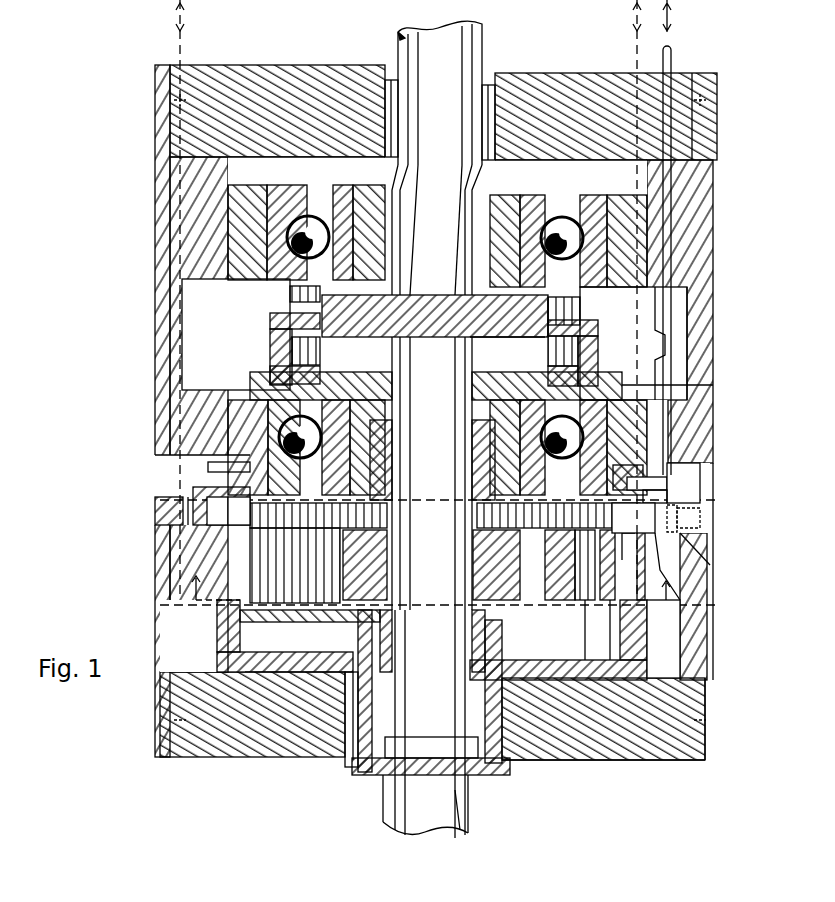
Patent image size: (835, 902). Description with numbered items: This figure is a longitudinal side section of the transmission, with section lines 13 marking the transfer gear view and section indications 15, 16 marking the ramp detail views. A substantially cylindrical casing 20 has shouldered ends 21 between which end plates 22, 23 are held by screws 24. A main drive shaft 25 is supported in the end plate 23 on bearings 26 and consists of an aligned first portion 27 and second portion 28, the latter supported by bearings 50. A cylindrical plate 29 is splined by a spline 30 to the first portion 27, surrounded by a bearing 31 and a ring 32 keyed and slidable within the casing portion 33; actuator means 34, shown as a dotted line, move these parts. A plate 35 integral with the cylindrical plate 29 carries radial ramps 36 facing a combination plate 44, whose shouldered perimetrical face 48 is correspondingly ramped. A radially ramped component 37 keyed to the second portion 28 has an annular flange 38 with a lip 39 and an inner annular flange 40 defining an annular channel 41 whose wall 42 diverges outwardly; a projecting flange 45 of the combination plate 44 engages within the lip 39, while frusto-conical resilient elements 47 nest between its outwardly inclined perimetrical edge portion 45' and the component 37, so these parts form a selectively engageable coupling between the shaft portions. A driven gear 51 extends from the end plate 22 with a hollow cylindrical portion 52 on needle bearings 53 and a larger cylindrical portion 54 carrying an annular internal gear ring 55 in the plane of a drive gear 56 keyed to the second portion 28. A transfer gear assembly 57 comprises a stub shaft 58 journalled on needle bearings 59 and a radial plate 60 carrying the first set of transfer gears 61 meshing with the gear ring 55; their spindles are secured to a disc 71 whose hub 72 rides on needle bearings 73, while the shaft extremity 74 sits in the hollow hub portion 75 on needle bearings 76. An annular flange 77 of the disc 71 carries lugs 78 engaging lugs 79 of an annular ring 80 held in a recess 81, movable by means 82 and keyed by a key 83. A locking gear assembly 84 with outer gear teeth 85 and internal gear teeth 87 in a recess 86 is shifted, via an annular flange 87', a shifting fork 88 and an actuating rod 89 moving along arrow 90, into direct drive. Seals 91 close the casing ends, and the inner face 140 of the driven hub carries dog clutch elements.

The section line 13 is at (426, 576).
The lower ball bearing 15 is at (283, 408).
The upper ball bearing 16 is at (297, 266).
The casing 20 is at (710, 598).
The shouldered ends 21 is at (705, 690).
The end plate 22 is at (660, 762).
The end plate 23 is at (570, 80).
The screws 24 is at (706, 740).
The main drive shaft 25 is at (440, 93).
The bearings 26 is at (378, 90).
The first portion 27 is at (437, 230).
The second portion 28 is at (432, 422).
The cylindrical plate 29 is at (368, 200).
The spline 30 is at (482, 180).
The bearing 31 is at (575, 195).
The ring 32 is at (618, 196).
The casing portion 33 is at (228, 175).
The actuator means 34 is at (632, 12).
The plate 35 is at (580, 310).
The radial ramps 36 is at (290, 294).
The radially ramped component 37 is at (375, 372).
The annular flange 38 is at (598, 366).
The lip 39 is at (598, 326).
The inner annular flange 40 is at (545, 350).
The annular channel 41 is at (580, 380).
The wall 42 is at (515, 345).
The combination plate 44 is at (432, 337).
The projecting flange 45 is at (611, 361).
The outwardly inclined perimetrical edge portion 45' is at (311, 360).
The frusto-conical resilient elements 47 is at (275, 362).
The shouldered perimetrical face 48 is at (270, 320).
The bearings 50 is at (568, 410).
The driven gear 51 is at (476, 816).
The hollow cylindrical portion 52 is at (505, 775).
The needle bearings 53 is at (500, 720).
The cylindrical portion 54 is at (655, 640).
The annular internal gear ring 55 is at (635, 612).
The drive gear 56 is at (520, 630).
The transfer gear assembly 57 is at (420, 700).
The stub shaft 58 is at (431, 746).
The needle bearings 59 is at (362, 775).
The radial plate 60 is at (288, 612).
The first set of transfer gears 61 is at (586, 625).
The plate or disc 71 is at (375, 510).
The hub 72 is at (380, 460).
The needle bearings 73 is at (392, 435).
The extremity 74 is at (432, 558).
The hollow hub portion 75 is at (380, 630).
The needle bearings 76 is at (478, 640).
The annular flange 77 is at (635, 548).
The lugs 78 is at (705, 580).
The lugs 79 is at (711, 555).
The annular ring 80 is at (700, 522).
The recess 81 is at (700, 468).
The ring moving means 82 is at (178, 12).
The key 83 is at (667, 494).
The locking gear assembly 84 is at (612, 625).
The gear teeth 85 is at (635, 518).
The recess 86 is at (315, 527).
The gear teeth 87 is at (583, 565).
The annular flange 87' is at (679, 460).
The shifting fork 88 is at (681, 386).
The actuating rod 89 is at (690, 331).
The double headed arrow 90 is at (672, 12).
The seals 91 is at (505, 75).
The inner face 140 is at (348, 652).